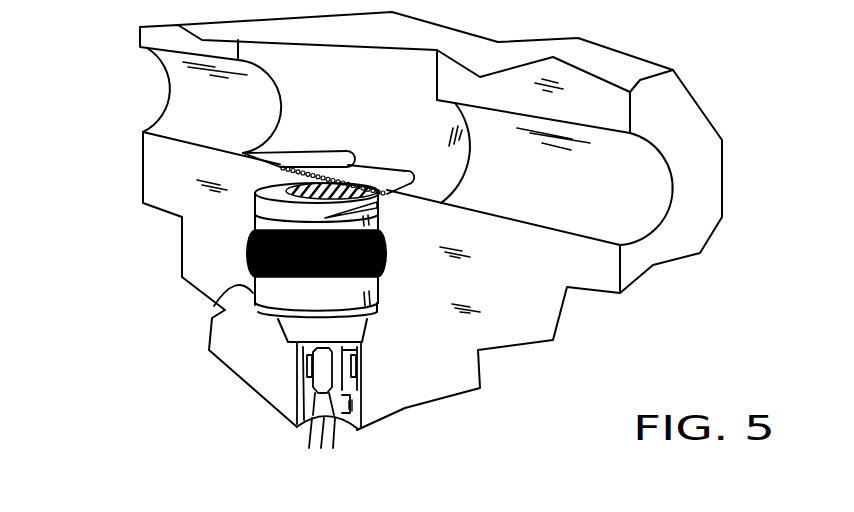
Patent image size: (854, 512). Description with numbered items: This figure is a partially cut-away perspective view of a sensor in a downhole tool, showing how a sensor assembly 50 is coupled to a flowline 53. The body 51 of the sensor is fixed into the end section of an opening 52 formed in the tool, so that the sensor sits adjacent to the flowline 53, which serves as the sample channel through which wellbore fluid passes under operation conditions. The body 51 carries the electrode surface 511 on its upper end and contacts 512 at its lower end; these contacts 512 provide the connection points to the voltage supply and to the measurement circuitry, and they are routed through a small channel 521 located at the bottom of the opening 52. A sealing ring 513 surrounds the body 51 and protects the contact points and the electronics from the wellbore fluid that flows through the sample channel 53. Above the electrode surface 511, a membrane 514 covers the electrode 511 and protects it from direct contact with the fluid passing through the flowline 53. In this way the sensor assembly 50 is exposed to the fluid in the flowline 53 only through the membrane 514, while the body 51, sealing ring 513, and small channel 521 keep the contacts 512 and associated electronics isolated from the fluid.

The sensor assembly 50 is at (206, 253).
The body 51 is at (276, 267).
The opening 52 is at (373, 102).
The flowline 53 is at (220, 125).
The electrode surface 511 is at (386, 207).
The contacts 512 is at (326, 448).
The sealing ring 513 is at (247, 246).
The membrane 514 is at (342, 150).
The small channel 521 is at (302, 431).